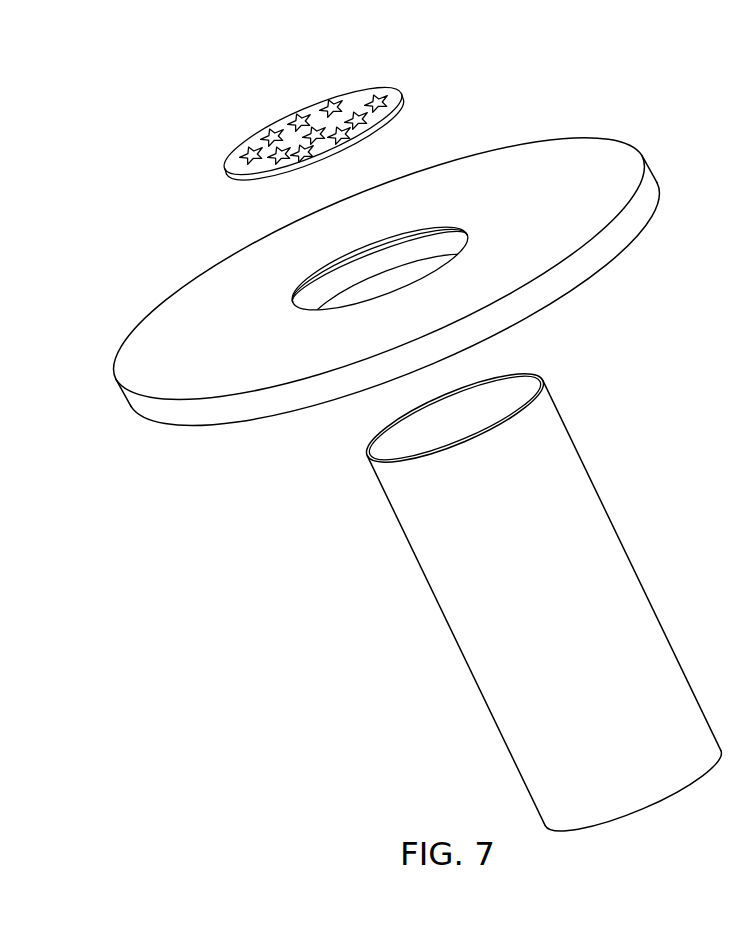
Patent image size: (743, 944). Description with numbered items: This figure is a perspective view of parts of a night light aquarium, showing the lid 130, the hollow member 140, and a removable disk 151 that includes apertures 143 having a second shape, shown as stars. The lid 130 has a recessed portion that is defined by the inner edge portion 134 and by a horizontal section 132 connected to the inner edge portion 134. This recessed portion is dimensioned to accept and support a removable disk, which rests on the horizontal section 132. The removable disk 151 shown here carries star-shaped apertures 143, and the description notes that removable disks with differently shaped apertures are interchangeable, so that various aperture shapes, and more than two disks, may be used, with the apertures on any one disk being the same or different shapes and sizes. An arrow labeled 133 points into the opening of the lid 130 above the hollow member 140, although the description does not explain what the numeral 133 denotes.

The lid 130 is at (600, 138).
The horizontal section 132 is at (443, 236).
The inner passage 133 is at (364, 279).
The inner edge portion 134 is at (416, 228).
The hollow member 140 is at (633, 572).
The apertures 143 is at (317, 105).
The removable disk 151 is at (392, 92).